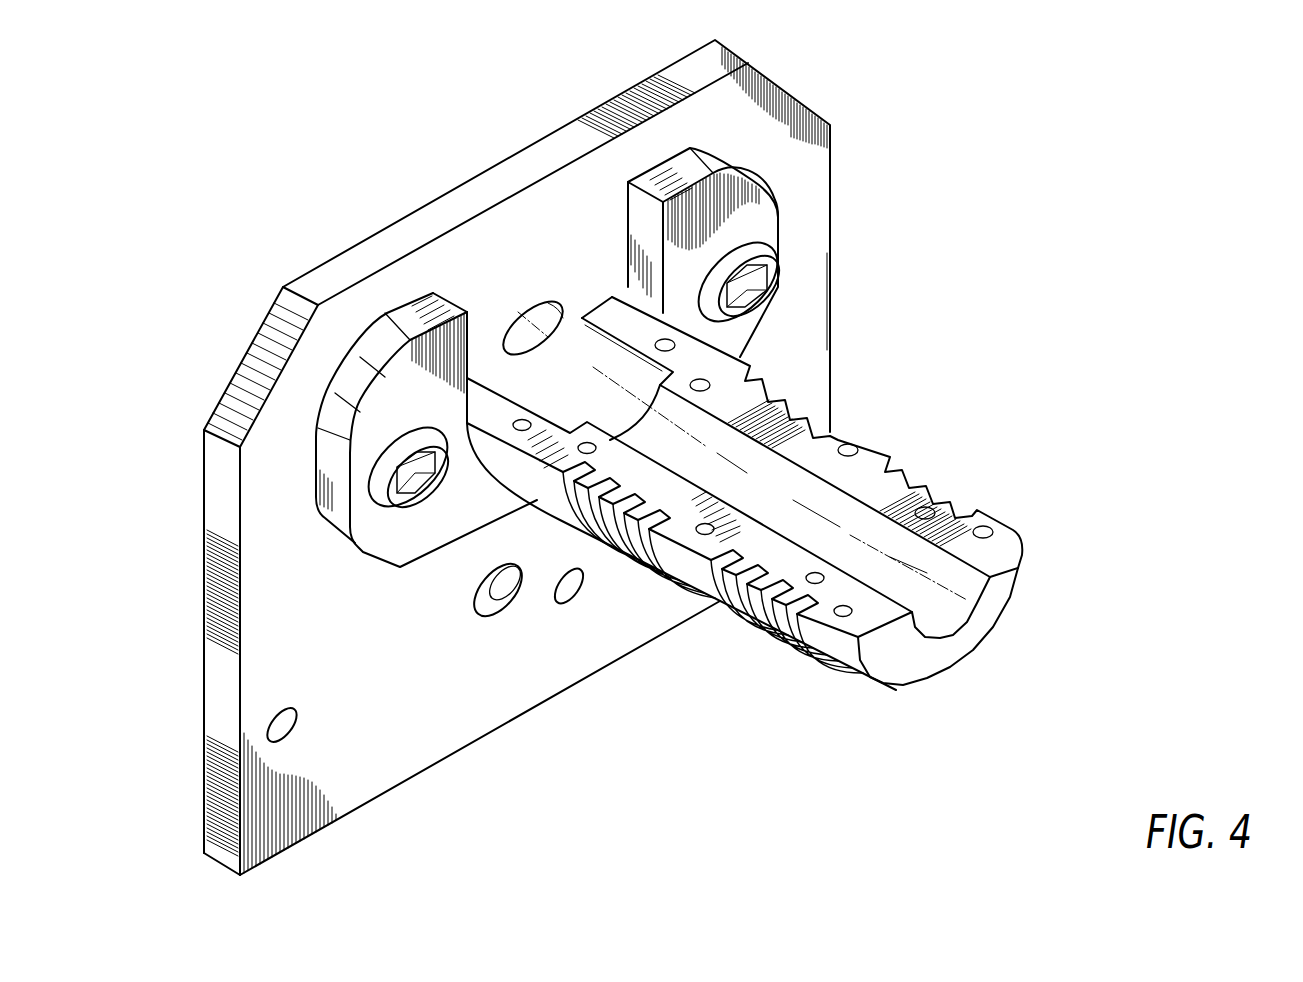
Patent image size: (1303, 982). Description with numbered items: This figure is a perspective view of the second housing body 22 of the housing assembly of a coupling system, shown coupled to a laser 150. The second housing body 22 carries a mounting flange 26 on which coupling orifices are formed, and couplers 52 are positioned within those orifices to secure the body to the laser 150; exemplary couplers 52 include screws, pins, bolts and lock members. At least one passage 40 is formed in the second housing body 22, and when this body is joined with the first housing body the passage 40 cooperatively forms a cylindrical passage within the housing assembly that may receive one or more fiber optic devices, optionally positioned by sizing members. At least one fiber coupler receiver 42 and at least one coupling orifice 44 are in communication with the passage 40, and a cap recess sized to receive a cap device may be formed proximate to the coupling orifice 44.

The laser 150 is at (371, 170).
The second housing body 22 is at (488, 405).
The mounting flange 26 is at (740, 220).
The passage 40 is at (673, 419).
The fiber coupler receiver 42 is at (966, 612).
The coupling orifice 44 is at (590, 397).
The coupler 52 is at (397, 470).